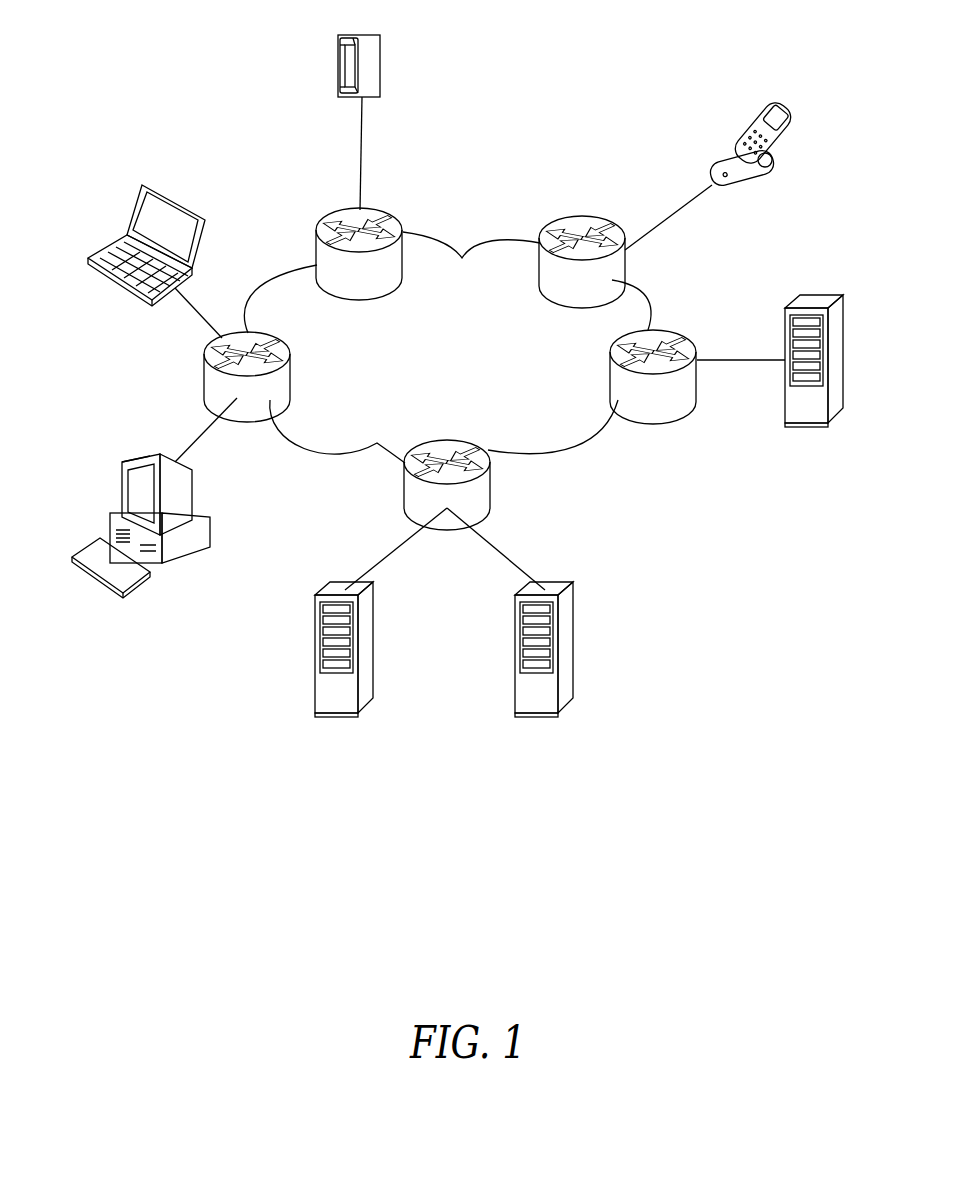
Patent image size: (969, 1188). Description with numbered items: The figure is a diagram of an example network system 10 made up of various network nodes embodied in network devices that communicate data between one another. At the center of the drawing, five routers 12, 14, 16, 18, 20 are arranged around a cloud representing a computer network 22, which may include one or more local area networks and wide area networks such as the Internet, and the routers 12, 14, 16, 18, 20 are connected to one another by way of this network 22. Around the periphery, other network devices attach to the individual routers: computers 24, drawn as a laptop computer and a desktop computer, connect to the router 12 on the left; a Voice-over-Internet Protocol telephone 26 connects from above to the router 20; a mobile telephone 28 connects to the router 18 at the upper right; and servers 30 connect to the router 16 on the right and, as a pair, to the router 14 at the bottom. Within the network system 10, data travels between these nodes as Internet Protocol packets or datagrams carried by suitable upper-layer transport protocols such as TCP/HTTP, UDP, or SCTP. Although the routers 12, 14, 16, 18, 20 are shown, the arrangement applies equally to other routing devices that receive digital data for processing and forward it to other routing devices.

The network system 10 is at (143, 32).
The router 12 is at (219, 359).
The router 14 is at (461, 485).
The router 16 is at (686, 384).
The router 18 is at (550, 248).
The router 20 is at (363, 240).
The network (e.g., Internet) 22 is at (462, 373).
The computer 24 is at (117, 382).
The Voice-over-Internet Protocol (VoIP) telephone 26 is at (396, 49).
The mobile telephone 28 is at (736, 165).
The server 30 is at (549, 510).